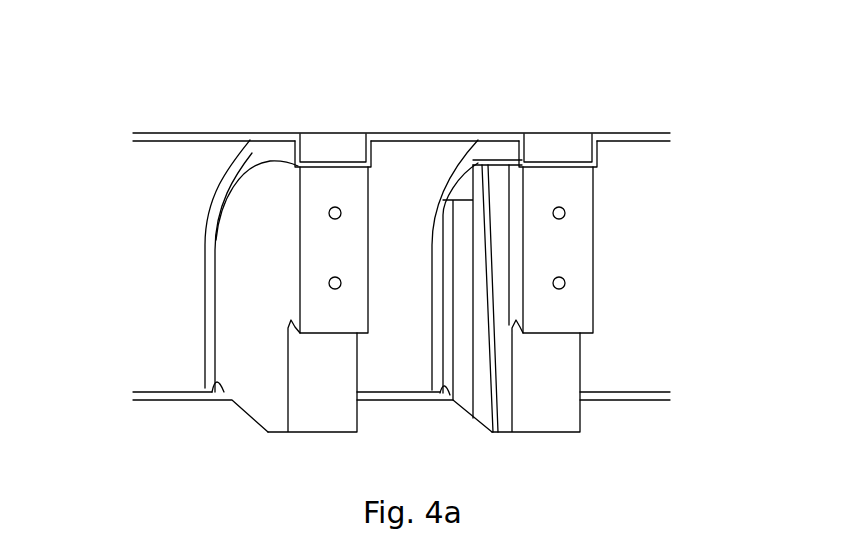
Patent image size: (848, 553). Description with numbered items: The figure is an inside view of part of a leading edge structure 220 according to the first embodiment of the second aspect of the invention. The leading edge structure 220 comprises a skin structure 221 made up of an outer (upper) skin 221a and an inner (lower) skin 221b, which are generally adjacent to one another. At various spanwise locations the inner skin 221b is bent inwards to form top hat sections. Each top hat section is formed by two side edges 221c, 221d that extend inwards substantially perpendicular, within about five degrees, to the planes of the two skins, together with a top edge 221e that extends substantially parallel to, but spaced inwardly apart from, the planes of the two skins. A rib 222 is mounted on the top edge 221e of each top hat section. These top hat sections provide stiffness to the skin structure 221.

The leading edge structure 220 is at (414, 270).
The skin structure 221 is at (408, 120).
The outer skin 221a is at (175, 133).
The inner skin 221b is at (173, 142).
The side edge 221c is at (252, 153).
The side edge 221d is at (387, 133).
The top edge 221e is at (330, 152).
The rib 222 is at (313, 417).